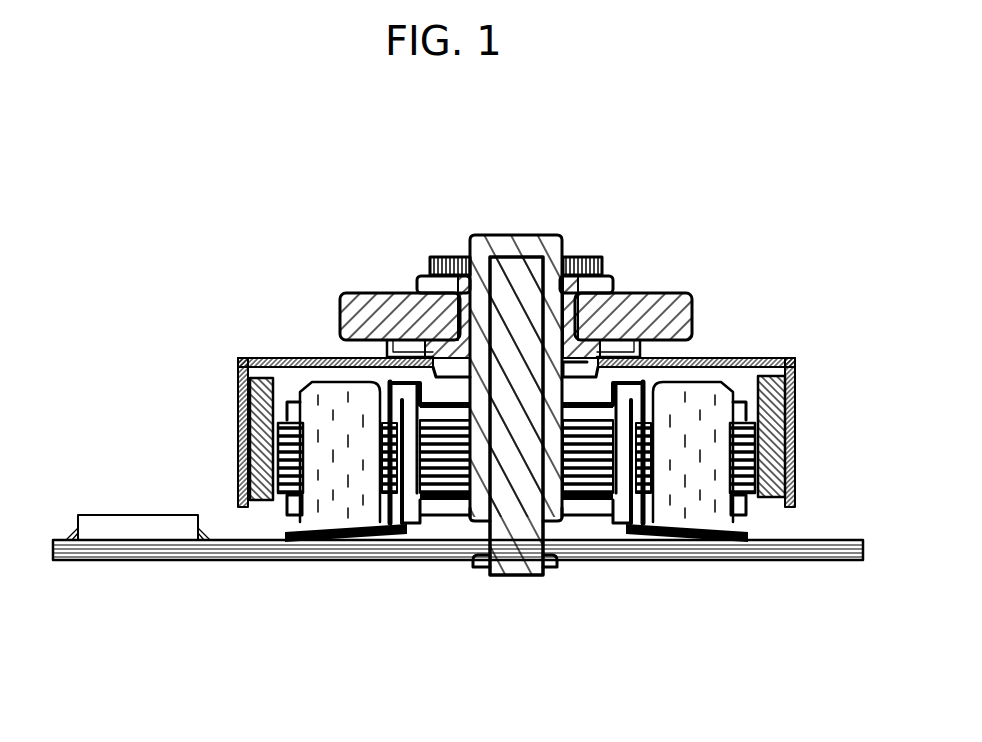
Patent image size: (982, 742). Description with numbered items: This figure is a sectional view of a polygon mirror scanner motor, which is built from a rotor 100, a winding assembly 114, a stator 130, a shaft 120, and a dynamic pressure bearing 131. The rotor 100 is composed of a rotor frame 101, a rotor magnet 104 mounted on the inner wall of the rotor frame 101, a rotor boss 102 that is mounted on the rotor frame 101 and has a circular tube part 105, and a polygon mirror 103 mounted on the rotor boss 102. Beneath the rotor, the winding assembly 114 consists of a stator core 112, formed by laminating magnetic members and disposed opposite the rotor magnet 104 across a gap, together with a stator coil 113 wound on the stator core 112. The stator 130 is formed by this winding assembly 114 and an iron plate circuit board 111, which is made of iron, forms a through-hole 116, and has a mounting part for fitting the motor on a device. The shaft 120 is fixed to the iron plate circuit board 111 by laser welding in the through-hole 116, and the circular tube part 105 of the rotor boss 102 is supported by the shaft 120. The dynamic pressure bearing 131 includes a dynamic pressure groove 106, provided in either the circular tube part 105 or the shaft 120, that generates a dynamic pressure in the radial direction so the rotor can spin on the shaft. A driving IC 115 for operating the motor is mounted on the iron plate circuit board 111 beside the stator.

The rotor 100 is at (242, 338).
The rotor frame 101 is at (775, 355).
The rotor boss 102 is at (553, 235).
The polygon mirror 103 is at (675, 307).
The rotor magnet 104 is at (792, 432).
The circular tube part 105 is at (607, 268).
The dynamic pressure groove 106 is at (475, 262).
The iron plate circuit board 111 is at (347, 548).
The stator core 112 is at (755, 485).
The stator coil 113 is at (685, 487).
The winding assembly 114 is at (885, 622).
The driving IC 115 is at (140, 515).
The through-hole 116 is at (552, 563).
The shaft 120 is at (503, 388).
The stator 130 is at (242, 573).
The dynamic pressure bearing 131 is at (547, 522).